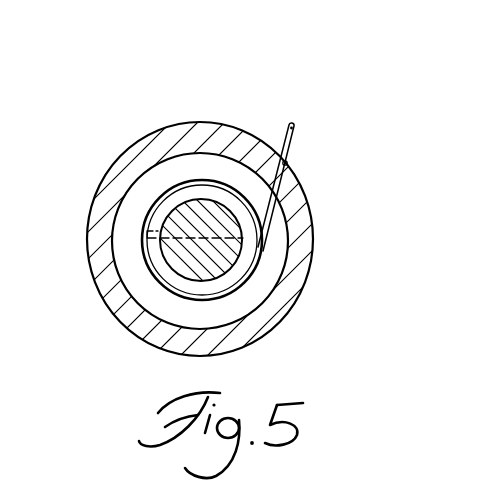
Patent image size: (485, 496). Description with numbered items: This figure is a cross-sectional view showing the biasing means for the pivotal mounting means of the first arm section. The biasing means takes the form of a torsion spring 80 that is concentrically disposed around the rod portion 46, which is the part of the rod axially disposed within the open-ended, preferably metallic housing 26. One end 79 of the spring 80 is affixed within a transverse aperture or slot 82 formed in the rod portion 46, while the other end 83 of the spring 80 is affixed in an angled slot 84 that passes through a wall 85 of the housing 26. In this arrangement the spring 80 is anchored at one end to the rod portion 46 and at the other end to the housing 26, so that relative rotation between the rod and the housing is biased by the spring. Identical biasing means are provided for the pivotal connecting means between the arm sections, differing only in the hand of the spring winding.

The housing 26 is at (315, 213).
The wall of the housing 85 is at (174, 131).
The torsion spring 80 is at (160, 190).
The rod portion 46 is at (175, 222).
The transverse aperture or slot 82 is at (188, 232).
The one end of the spring 79 is at (150, 253).
The other end of the spring 83 is at (295, 127).
The angled slot 84 is at (287, 164).